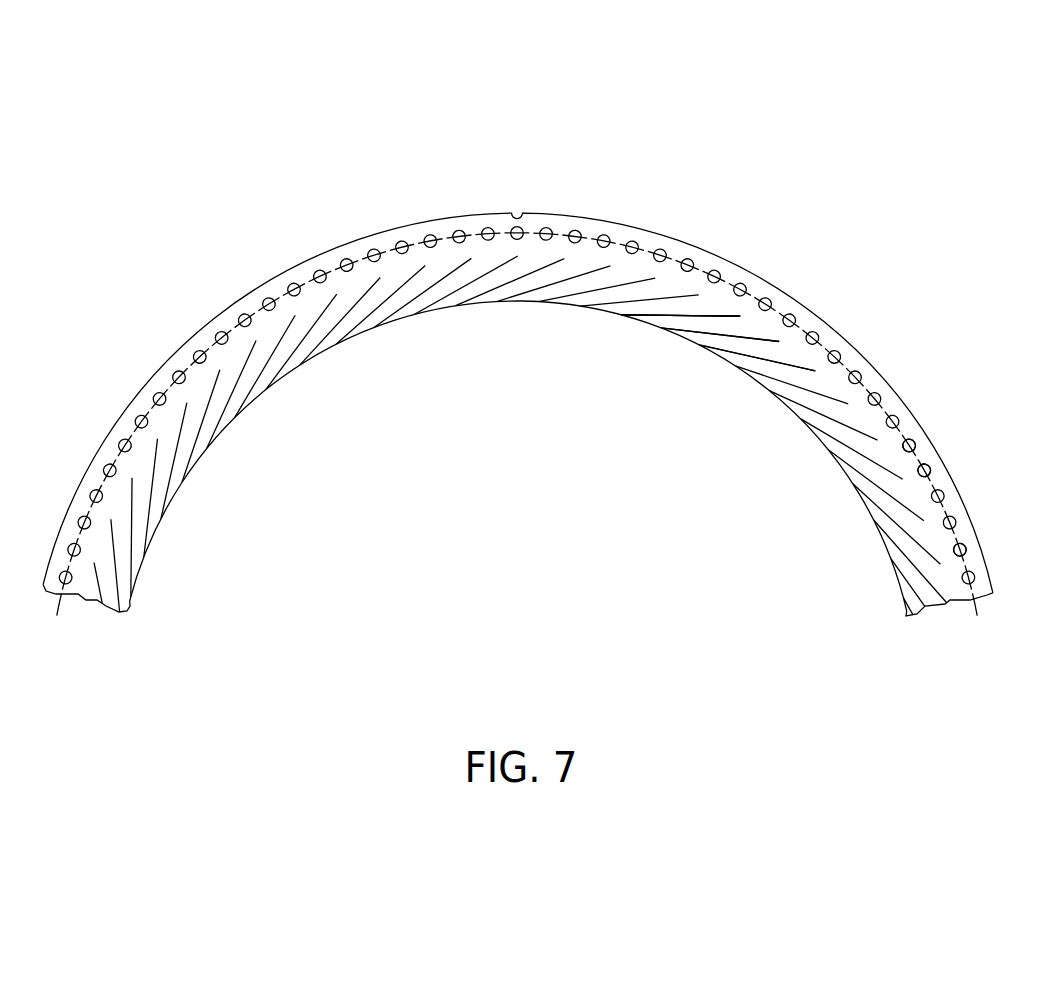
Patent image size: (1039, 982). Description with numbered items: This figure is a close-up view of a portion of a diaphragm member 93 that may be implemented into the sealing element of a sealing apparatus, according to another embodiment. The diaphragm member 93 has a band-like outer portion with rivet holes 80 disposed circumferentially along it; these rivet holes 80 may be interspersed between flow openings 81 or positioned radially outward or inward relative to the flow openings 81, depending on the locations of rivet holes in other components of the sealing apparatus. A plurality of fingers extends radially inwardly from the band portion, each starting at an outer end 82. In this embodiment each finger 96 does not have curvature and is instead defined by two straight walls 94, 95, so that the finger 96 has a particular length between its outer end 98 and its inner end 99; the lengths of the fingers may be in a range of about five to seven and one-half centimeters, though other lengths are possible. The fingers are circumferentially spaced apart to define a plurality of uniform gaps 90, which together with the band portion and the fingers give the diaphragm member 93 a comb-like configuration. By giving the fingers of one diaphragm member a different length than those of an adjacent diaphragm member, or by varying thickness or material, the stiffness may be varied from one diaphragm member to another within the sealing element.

The diaphragm member 93 is at (832, 172).
The rivet holes 80 is at (874, 399).
The flow openings 81 is at (909, 445).
The outer end 82 is at (930, 538).
The gaps 90 is at (750, 357).
The wall 94 is at (727, 317).
The wall 95 is at (747, 335).
The outer end 98 is at (785, 338).
The inner end 99 is at (640, 320).
The finger 96 is at (697, 320).